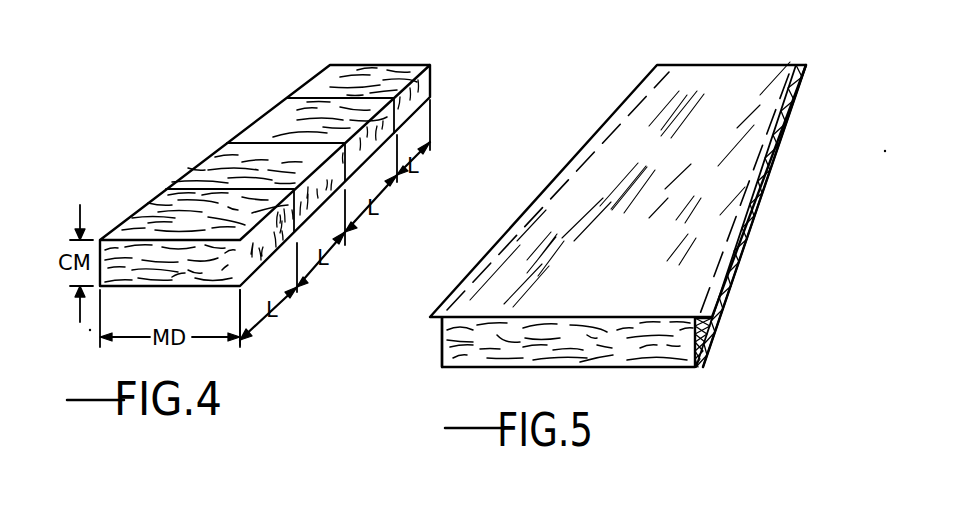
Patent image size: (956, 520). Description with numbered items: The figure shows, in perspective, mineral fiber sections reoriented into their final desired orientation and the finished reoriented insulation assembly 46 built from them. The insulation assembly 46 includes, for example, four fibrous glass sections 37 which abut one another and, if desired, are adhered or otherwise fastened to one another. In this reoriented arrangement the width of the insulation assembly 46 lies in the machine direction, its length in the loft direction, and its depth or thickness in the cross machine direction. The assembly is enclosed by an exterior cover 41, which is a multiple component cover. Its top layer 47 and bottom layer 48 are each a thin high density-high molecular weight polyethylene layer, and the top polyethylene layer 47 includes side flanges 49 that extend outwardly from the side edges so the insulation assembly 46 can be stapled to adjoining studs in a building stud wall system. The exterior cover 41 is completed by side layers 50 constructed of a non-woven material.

In FIG. 4, the fibrous glass sections 37 is at (146, 203).
In FIG. 5, the exterior cover 41 is at (618, 191).
In FIG. 5, the insulation assembly 46 is at (706, 131).
In FIG. 5, the top layer 47 is at (730, 198).
In FIG. 5, the bottom layer 48 is at (664, 368).
In FIG. 5, the side flanges 49 is at (593, 137).
In FIG. 5, the side layers 50 is at (441, 343).